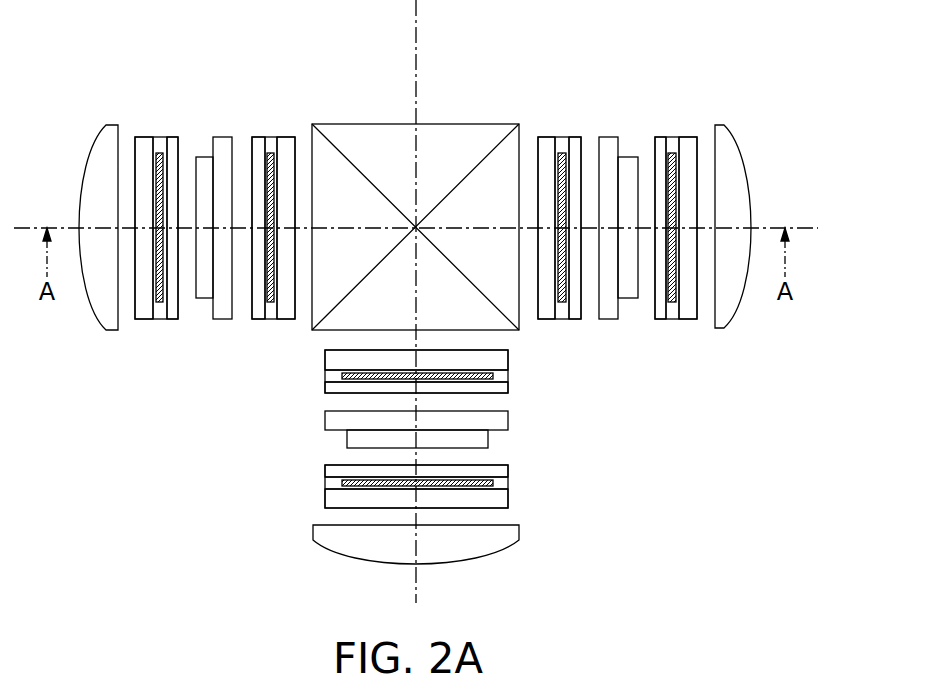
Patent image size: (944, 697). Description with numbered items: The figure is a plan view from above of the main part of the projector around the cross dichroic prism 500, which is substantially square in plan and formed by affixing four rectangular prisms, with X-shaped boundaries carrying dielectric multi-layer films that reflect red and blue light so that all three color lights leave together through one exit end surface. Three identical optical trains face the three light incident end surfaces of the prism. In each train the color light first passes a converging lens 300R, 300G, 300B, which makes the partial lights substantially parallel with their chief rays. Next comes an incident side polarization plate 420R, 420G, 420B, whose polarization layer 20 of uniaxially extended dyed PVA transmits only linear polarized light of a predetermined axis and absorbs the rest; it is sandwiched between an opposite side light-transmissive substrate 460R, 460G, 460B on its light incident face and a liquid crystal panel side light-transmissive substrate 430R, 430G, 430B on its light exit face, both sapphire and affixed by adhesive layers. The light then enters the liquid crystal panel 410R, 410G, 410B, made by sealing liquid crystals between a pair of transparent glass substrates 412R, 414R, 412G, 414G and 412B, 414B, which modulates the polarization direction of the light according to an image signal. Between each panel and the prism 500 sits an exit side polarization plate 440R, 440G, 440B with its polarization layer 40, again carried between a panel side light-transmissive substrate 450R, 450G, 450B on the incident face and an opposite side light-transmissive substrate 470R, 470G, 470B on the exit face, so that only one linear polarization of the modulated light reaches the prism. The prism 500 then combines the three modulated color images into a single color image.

The cross dichroic prism 500 is at (480, 124).
The converging lens 300R is at (112, 331).
The converging lens 300G is at (313, 528).
The converging lens 300B is at (720, 329).
The polarization layer 20 is at (160, 305).
The polarization layer 40 is at (270, 305).
The red light liquid crystal panel 410R is at (210, 170).
The transparent glass substrate 412R is at (207, 157).
The transparent glass substrate 414R is at (228, 125).
The incident side polarization plate 420R is at (160, 128).
The light-transmissive substrate 430R is at (175, 137).
The exit side polarization plate 440R is at (283, 137).
The light-transmissive substrate 450R is at (270, 128).
The light-transmissive substrate 460R is at (135, 137).
The light-transmissive substrate 470R is at (293, 137).
The liquid crystal panel 410G is at (424, 442).
The transparent glass substrate 412G is at (347, 437).
The transparent glass substrate 414G is at (325, 416).
The incident side polarization plate 420G is at (520, 482).
The light-transmissive substrate 430G is at (508, 475).
The exit side polarization plate 440G is at (520, 375).
The light-transmissive substrate 450G is at (508, 390).
The light-transmissive substrate 460G is at (508, 503).
The light-transmissive substrate 470G is at (508, 358).
The liquid crystal panel 410B is at (624, 170).
The transparent glass substrate 412B is at (627, 157).
The transparent glass substrate 414B is at (612, 137).
The incident side polarization plate 420B is at (672, 128).
The light-transmissive substrate 430B is at (663, 137).
The exit side polarization plate 440B is at (562, 128).
The light-transmissive substrate 450B is at (573, 137).
The light-transmissive substrate 460B is at (692, 137).
The light-transmissive substrate 470B is at (542, 137).